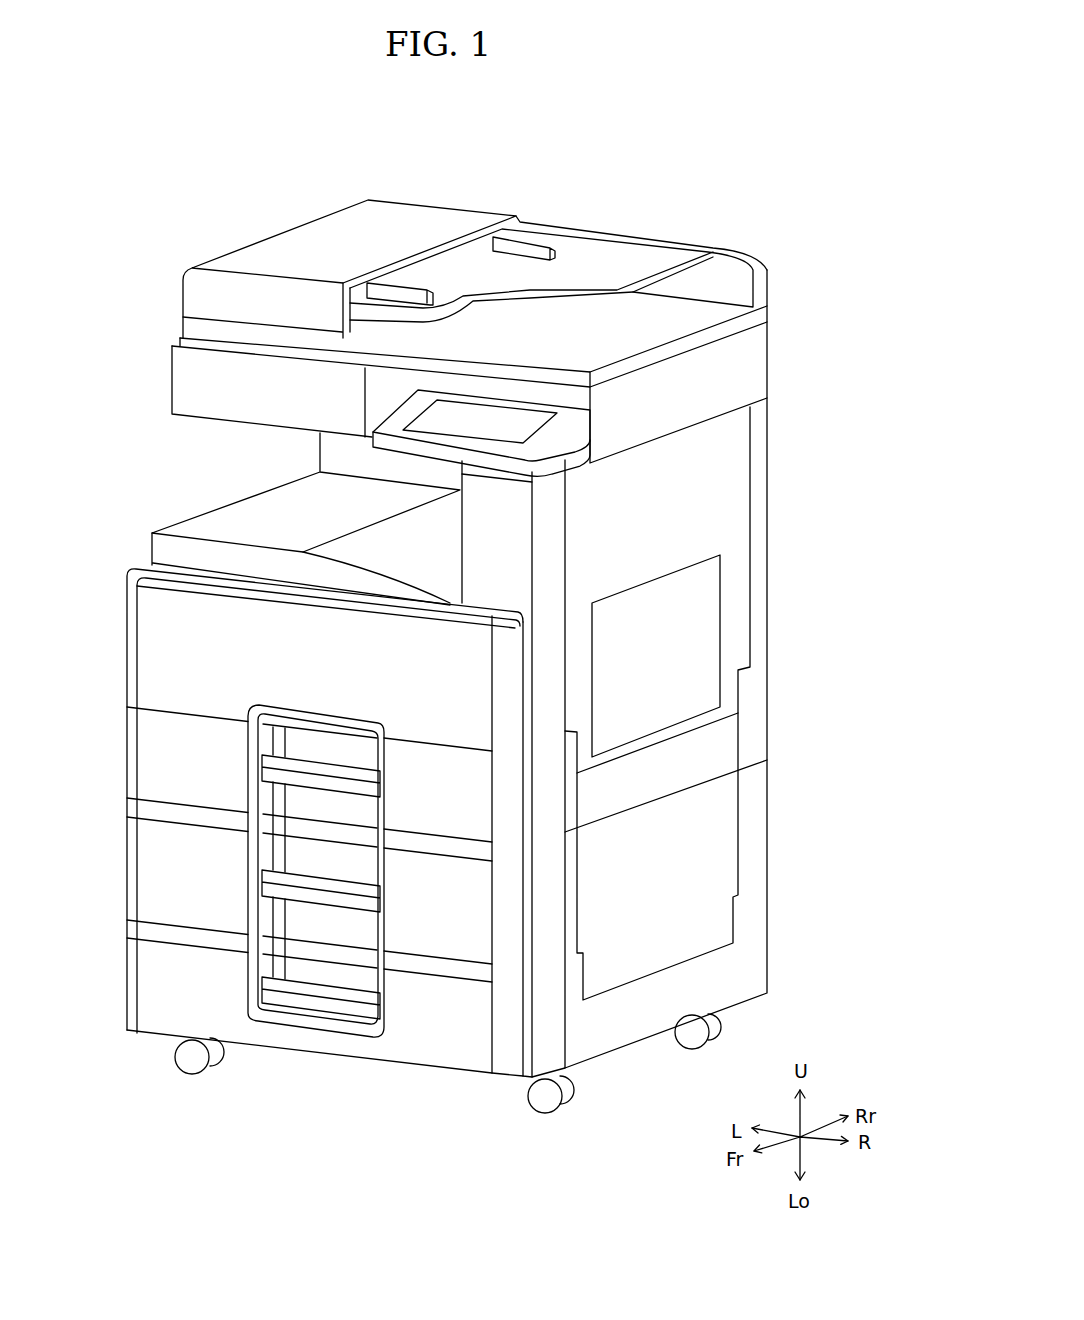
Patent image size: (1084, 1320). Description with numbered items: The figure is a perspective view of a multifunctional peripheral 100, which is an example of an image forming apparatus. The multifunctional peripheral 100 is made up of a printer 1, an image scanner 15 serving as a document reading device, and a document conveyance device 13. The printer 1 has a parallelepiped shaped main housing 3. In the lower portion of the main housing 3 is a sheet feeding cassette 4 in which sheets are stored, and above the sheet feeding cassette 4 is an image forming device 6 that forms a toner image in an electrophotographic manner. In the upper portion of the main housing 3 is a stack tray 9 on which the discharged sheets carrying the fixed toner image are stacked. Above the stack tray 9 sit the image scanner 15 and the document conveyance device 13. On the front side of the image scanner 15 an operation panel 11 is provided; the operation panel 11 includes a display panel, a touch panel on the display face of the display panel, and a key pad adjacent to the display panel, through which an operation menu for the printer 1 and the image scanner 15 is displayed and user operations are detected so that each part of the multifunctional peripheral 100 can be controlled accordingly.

The multifunctional peripheral 100 is at (877, 143).
The printer 1 is at (783, 425).
The main housing 3 is at (768, 554).
The sheet feeding cassette 4 is at (127, 750).
The image forming device 6 is at (127, 632).
The stack tray 9 is at (227, 523).
The operation panel 11 is at (373, 443).
The document conveyance device 13 is at (784, 265).
The image scanner 15 is at (788, 357).